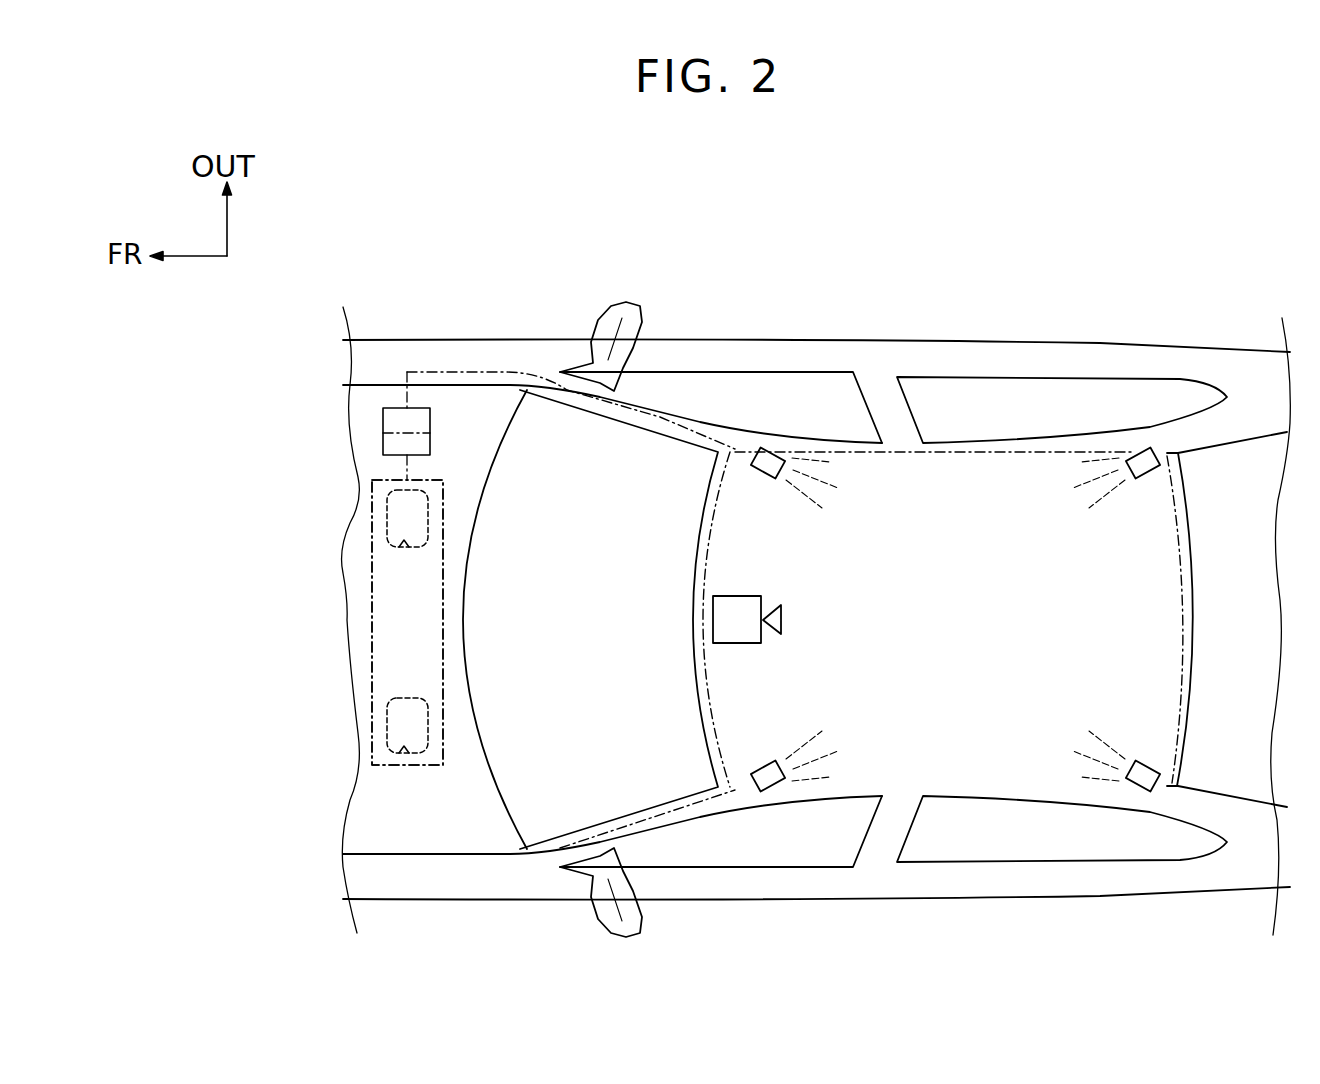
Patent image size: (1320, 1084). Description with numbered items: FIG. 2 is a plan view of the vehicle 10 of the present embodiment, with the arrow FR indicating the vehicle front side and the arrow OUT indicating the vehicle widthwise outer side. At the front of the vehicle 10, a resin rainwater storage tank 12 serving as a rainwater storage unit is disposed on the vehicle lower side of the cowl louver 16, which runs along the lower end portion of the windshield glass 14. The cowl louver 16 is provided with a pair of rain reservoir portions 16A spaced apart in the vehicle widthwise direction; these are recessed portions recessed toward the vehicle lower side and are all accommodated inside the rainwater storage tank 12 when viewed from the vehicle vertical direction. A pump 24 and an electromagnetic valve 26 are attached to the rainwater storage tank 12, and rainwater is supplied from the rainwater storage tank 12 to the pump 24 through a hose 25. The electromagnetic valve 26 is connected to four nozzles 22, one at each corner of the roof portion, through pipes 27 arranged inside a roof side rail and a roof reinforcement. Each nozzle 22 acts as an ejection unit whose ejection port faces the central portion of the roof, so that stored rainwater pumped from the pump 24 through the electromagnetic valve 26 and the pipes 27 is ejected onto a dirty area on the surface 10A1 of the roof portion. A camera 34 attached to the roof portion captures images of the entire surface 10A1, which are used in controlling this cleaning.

The vehicle 10 is at (998, 304).
The surface 10A1 is at (930, 616).
The rainwater storage tank 12 is at (443, 523).
The windshield glass 14 is at (572, 613).
The cowl louver 16 is at (460, 577).
The rain reservoir portion 16A is at (406, 548).
The nozzle 22 is at (765, 478).
The pump 24 is at (430, 445).
The hose 25 is at (410, 472).
The electromagnetic valve 26 is at (383, 420).
The pipe 27 is at (670, 426).
The camera 34 is at (765, 598).